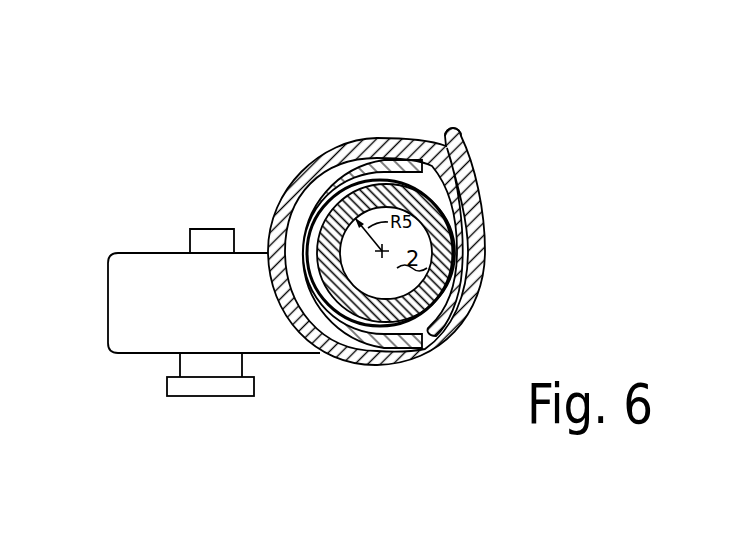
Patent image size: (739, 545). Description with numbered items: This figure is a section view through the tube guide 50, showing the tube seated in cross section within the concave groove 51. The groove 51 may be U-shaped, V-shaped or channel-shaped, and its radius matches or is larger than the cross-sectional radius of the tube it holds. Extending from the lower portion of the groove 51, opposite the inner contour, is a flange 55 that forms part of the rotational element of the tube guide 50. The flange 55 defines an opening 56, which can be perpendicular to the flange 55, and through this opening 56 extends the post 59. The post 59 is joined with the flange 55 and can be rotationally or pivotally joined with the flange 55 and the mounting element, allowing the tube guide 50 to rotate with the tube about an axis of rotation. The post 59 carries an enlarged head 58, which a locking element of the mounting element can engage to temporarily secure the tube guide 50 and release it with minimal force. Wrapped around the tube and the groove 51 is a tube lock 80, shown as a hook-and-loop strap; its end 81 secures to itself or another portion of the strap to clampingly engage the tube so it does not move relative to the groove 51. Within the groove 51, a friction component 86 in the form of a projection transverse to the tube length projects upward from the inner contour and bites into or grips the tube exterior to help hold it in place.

The tube guide 50 is at (151, 210).
The concave groove 51 is at (300, 223).
The flange 55 is at (108, 282).
The opening 56 is at (200, 240).
The enlarged head 58 is at (255, 382).
The post 59 is at (187, 362).
The tube lock 80 is at (463, 237).
The end 81 is at (452, 137).
The friction component 86 is at (332, 195).